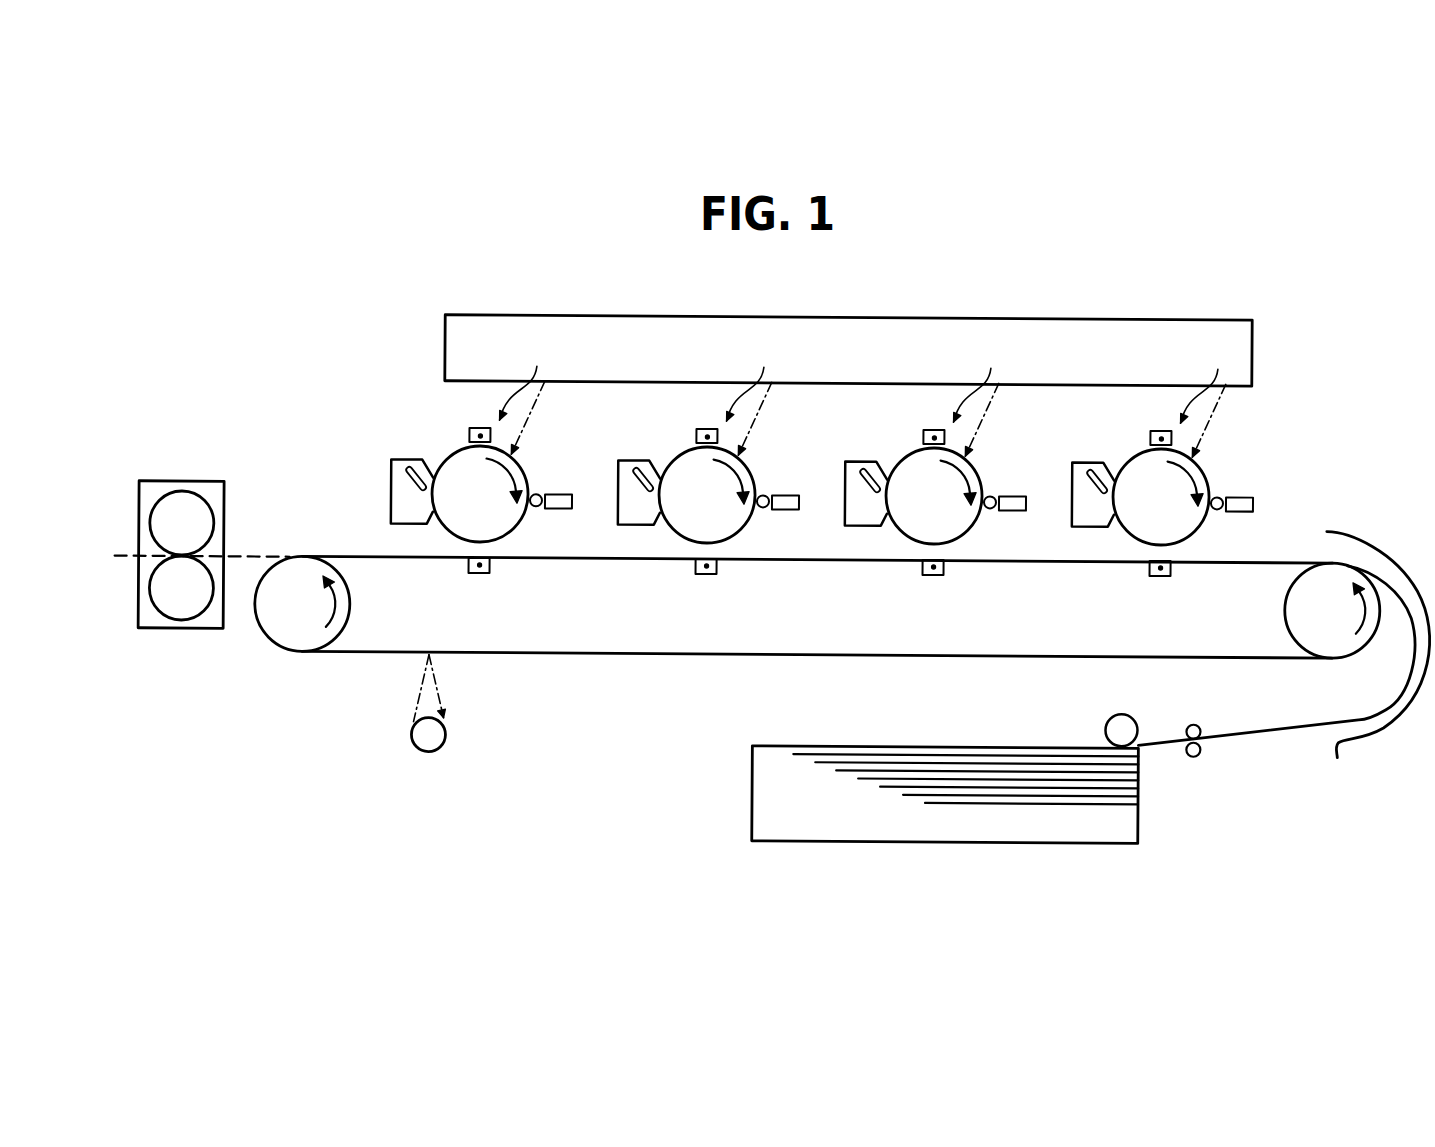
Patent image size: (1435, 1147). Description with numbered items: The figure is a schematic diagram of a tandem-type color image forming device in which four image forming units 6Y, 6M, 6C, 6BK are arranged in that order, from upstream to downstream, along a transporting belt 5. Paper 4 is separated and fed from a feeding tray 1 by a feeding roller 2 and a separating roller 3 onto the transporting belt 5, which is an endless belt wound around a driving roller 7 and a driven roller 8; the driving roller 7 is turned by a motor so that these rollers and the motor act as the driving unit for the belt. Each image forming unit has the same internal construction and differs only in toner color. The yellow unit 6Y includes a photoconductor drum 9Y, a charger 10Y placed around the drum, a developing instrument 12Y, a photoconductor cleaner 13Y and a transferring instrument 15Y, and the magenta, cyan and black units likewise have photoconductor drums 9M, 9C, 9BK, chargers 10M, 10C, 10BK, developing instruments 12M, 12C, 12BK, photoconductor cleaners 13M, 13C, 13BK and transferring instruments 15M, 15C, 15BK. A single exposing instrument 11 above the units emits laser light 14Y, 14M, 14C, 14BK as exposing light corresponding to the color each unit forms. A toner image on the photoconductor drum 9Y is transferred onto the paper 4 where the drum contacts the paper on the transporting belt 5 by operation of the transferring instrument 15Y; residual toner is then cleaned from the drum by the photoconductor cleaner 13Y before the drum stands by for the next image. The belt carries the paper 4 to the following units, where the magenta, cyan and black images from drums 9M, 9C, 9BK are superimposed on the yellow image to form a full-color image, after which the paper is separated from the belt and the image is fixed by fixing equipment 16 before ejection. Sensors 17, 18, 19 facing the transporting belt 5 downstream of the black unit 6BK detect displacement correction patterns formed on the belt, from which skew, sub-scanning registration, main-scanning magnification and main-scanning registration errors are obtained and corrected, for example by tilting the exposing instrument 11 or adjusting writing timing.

The feeding tray 1 is at (781, 744).
The feeding roller 2 is at (1128, 711).
The separating roller 3 is at (1198, 721).
The paper 4 is at (955, 744).
The transporting belt 5 is at (615, 654).
The driving roller 7 is at (352, 602).
The driven roller 8 is at (1285, 605).
The exposing instrument 11 is at (851, 315).
The fixing equipment 16 is at (186, 483).
The sensor 17 is at (450, 729).
The sensor 18 is at (450, 729).
The sensor 19 is at (430, 752).
The image forming unit 6BK is at (531, 378).
The image forming unit 6C is at (754, 379).
The image forming unit 6M is at (980, 380).
The image forming unit 6Y is at (1207, 381).
The photoconductor drum 9BK is at (451, 455).
The photoconductor drum 9C is at (693, 481).
The photoconductor drum 9M is at (919, 482).
The photoconductor drum 9Y is at (1146, 484).
The charger 10BK is at (477, 428).
The charger 10C is at (687, 415).
The charger 10M is at (913, 416).
The charger 10Y is at (1140, 417).
The developing instrument 12BK is at (556, 510).
The developing instrument 12C is at (787, 526).
The developing instrument 12M is at (1014, 527).
The developing instrument 12Y is at (1241, 528).
The photoconductor cleaner 13BK is at (391, 476).
The photoconductor cleaner 13C is at (607, 491).
The photoconductor cleaner 13M is at (834, 492).
The photoconductor cleaner 13Y is at (1062, 493).
The laser light 14BK is at (538, 427).
The laser light 14C is at (781, 419).
The laser light 14M is at (1008, 420).
The laser light 14Y is at (1235, 421).
The transferring instrument 15BK is at (478, 574).
The transferring instrument 15C is at (719, 593).
The transferring instrument 15M is at (945, 594).
The transferring instrument 15Y is at (1171, 595).